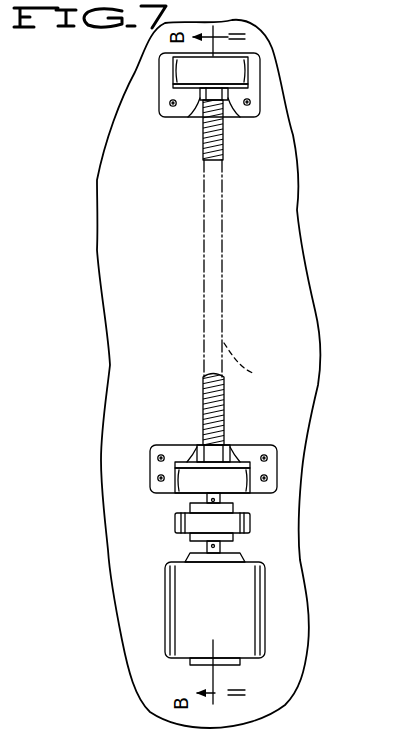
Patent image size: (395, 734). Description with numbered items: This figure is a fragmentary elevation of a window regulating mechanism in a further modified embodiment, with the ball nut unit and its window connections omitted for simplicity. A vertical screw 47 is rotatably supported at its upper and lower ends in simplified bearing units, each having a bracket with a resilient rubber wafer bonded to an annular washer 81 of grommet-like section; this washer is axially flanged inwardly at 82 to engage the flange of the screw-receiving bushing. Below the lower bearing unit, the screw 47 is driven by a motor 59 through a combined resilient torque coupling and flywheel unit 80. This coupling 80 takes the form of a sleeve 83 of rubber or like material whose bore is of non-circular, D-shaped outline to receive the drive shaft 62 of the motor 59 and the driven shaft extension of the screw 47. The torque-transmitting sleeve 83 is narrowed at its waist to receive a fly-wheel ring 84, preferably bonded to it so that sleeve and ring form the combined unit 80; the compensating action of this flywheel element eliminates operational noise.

The screw 47 is at (224, 392).
The motor 59 is at (190, 607).
The drive shaft 62 is at (220, 548).
The combined resilient torque coupling and flywheel unit 80 is at (246, 570).
The annular washer 81 is at (228, 446).
The inward axial flange 82 is at (200, 100).
The sleeve 83 is at (190, 535).
The fly-wheel ring 84 is at (250, 525).